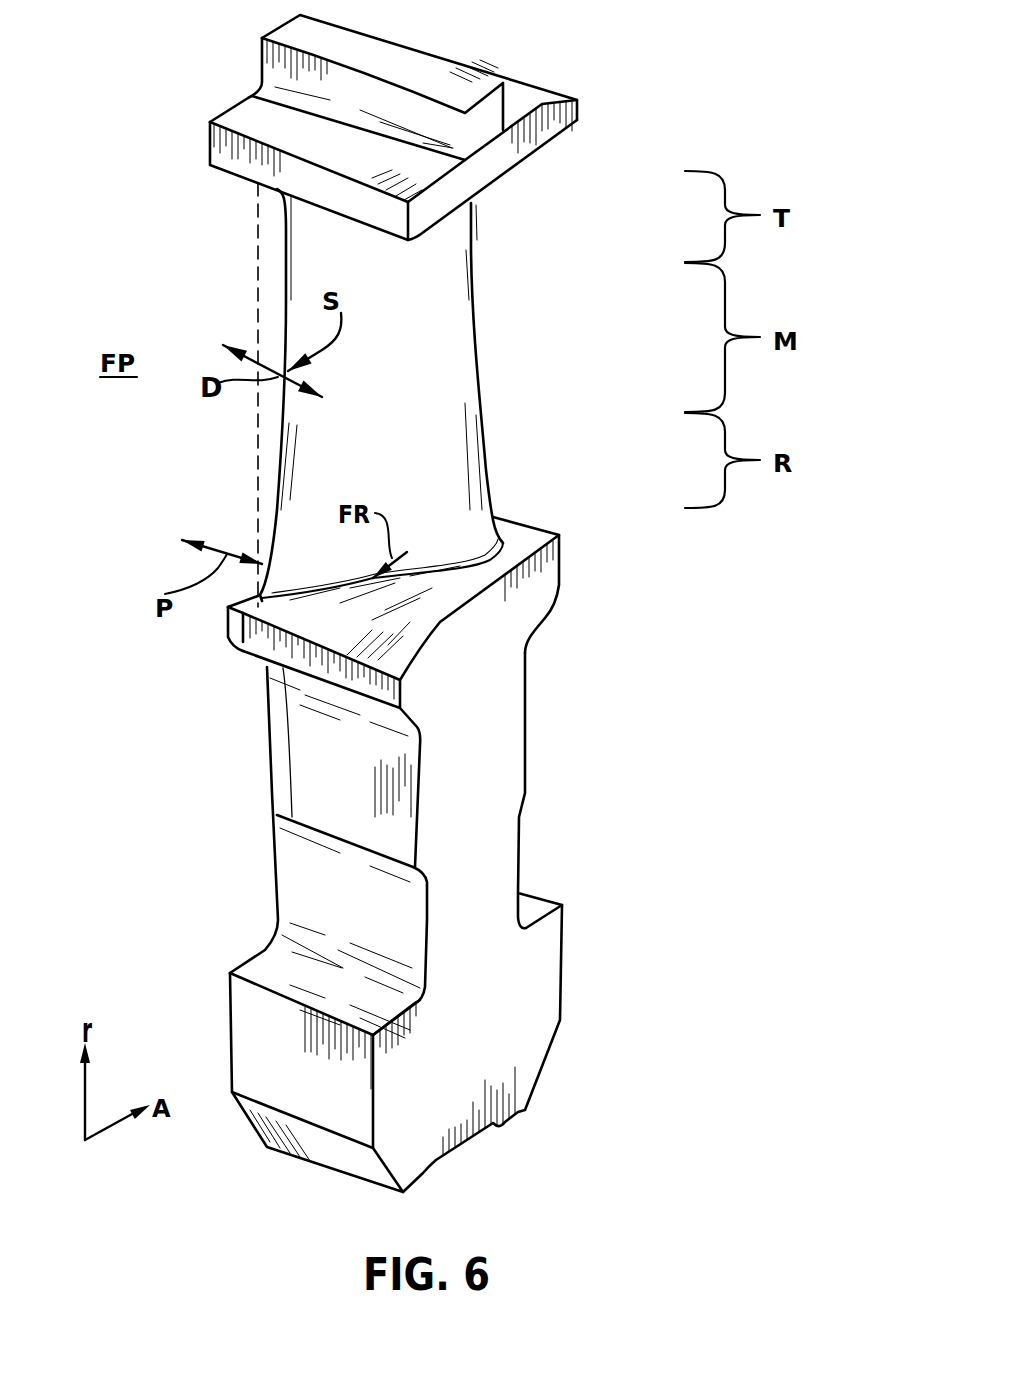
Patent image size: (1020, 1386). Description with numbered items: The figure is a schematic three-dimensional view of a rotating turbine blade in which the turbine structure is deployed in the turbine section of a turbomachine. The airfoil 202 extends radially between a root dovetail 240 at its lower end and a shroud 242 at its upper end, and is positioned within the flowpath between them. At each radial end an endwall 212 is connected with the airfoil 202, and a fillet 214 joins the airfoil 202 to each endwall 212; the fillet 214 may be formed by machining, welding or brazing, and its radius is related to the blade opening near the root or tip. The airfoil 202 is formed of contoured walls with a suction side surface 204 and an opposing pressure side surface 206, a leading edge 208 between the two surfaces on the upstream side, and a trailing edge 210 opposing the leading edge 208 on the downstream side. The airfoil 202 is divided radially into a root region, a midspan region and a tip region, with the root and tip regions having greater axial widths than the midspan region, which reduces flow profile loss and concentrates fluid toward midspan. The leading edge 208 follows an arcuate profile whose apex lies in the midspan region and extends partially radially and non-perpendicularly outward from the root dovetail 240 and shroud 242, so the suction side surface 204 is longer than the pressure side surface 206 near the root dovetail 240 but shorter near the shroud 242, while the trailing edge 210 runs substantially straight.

The airfoil 202 is at (377, 395).
The suction side surface 204 is at (262, 540).
The pressure side surface 206 is at (452, 312).
The leading edge 208 is at (298, 432).
The trailing edge 210 is at (483, 423).
The endwall 212 is at (546, 138).
The fillet 214 is at (510, 545).
The root dovetail 240 is at (453, 1114).
The shroud 242 is at (237, 152).